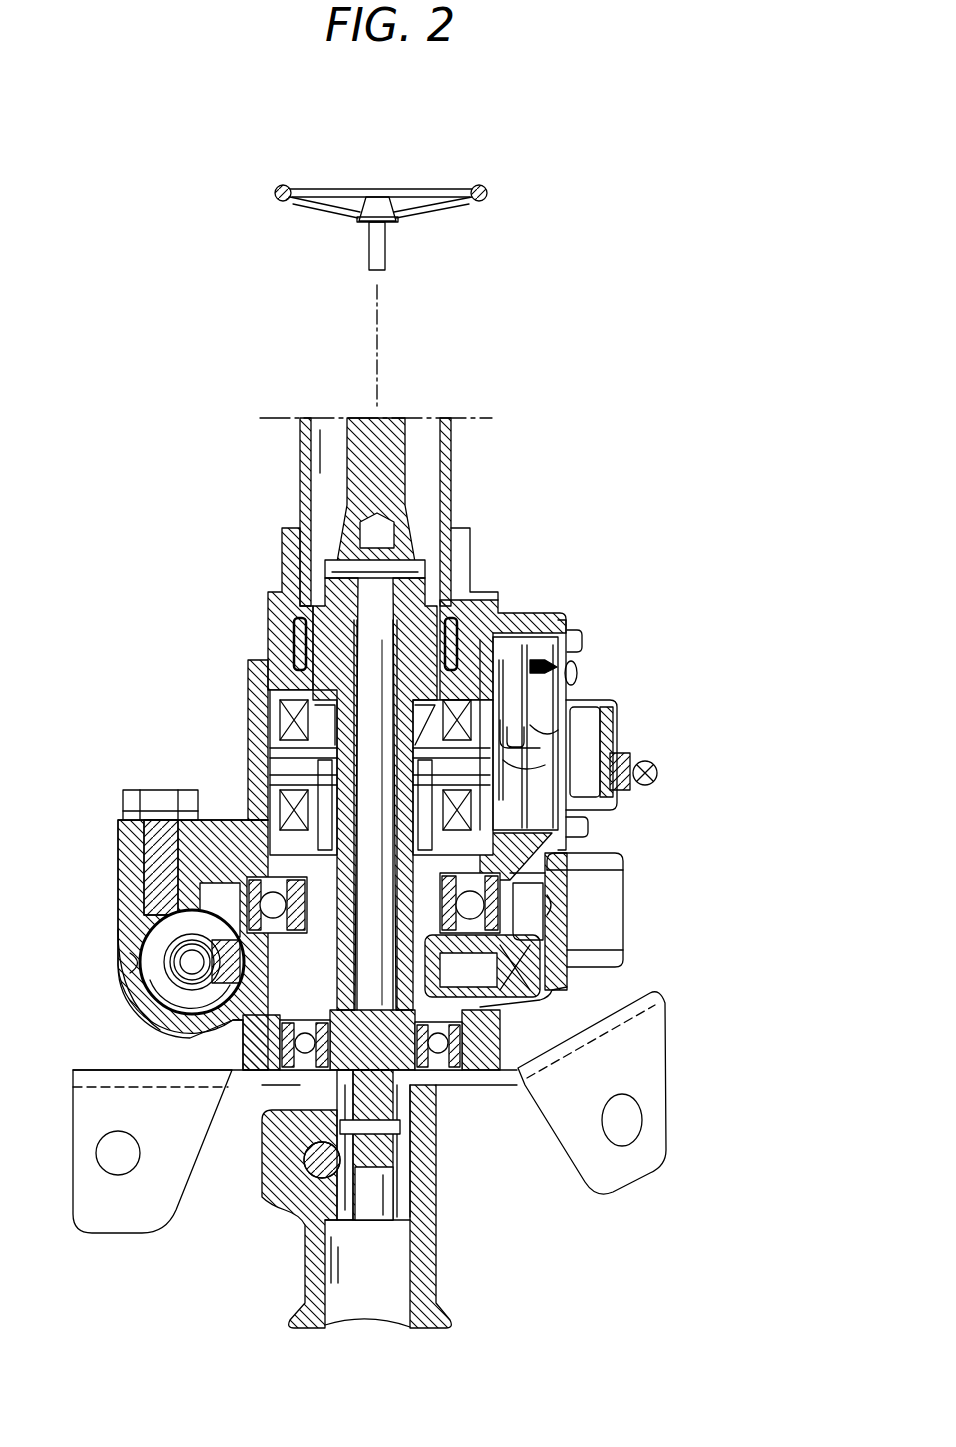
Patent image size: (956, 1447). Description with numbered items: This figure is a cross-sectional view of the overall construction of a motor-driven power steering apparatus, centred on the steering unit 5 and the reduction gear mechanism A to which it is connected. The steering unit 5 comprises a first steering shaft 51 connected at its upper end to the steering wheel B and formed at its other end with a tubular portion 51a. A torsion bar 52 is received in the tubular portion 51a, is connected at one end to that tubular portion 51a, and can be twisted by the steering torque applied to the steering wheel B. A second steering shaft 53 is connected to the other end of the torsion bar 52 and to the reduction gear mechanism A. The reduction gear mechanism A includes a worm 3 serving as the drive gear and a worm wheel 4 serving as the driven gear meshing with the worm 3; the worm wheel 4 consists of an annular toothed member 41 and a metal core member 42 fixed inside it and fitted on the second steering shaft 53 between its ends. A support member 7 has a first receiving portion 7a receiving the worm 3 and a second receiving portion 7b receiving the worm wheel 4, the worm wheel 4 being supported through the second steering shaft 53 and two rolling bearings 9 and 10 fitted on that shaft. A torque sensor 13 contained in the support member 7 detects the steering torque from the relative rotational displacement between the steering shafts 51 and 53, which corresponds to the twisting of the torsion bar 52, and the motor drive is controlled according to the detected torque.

The steering unit 5 is at (438, 386).
The steering wheel B is at (488, 193).
The first steering shaft 51 is at (407, 548).
The torsion bar 52 is at (500, 612).
The tubular portion 51a is at (297, 642).
The torque sensor 13 is at (540, 718).
The second steering shaft 53 is at (433, 1100).
The annular toothed member 41 is at (530, 950).
The core member 42 is at (540, 975).
The rolling bearing 10 is at (452, 1052).
The rolling bearing 9 is at (580, 875).
The second receiving portion 7b is at (535, 912).
The support member 7 is at (192, 1035).
The reduction gear mechanism A is at (165, 945).
The worm 3 is at (150, 997).
The worm wheel 4 is at (160, 1010).
The first receiving portion 7a is at (150, 963).